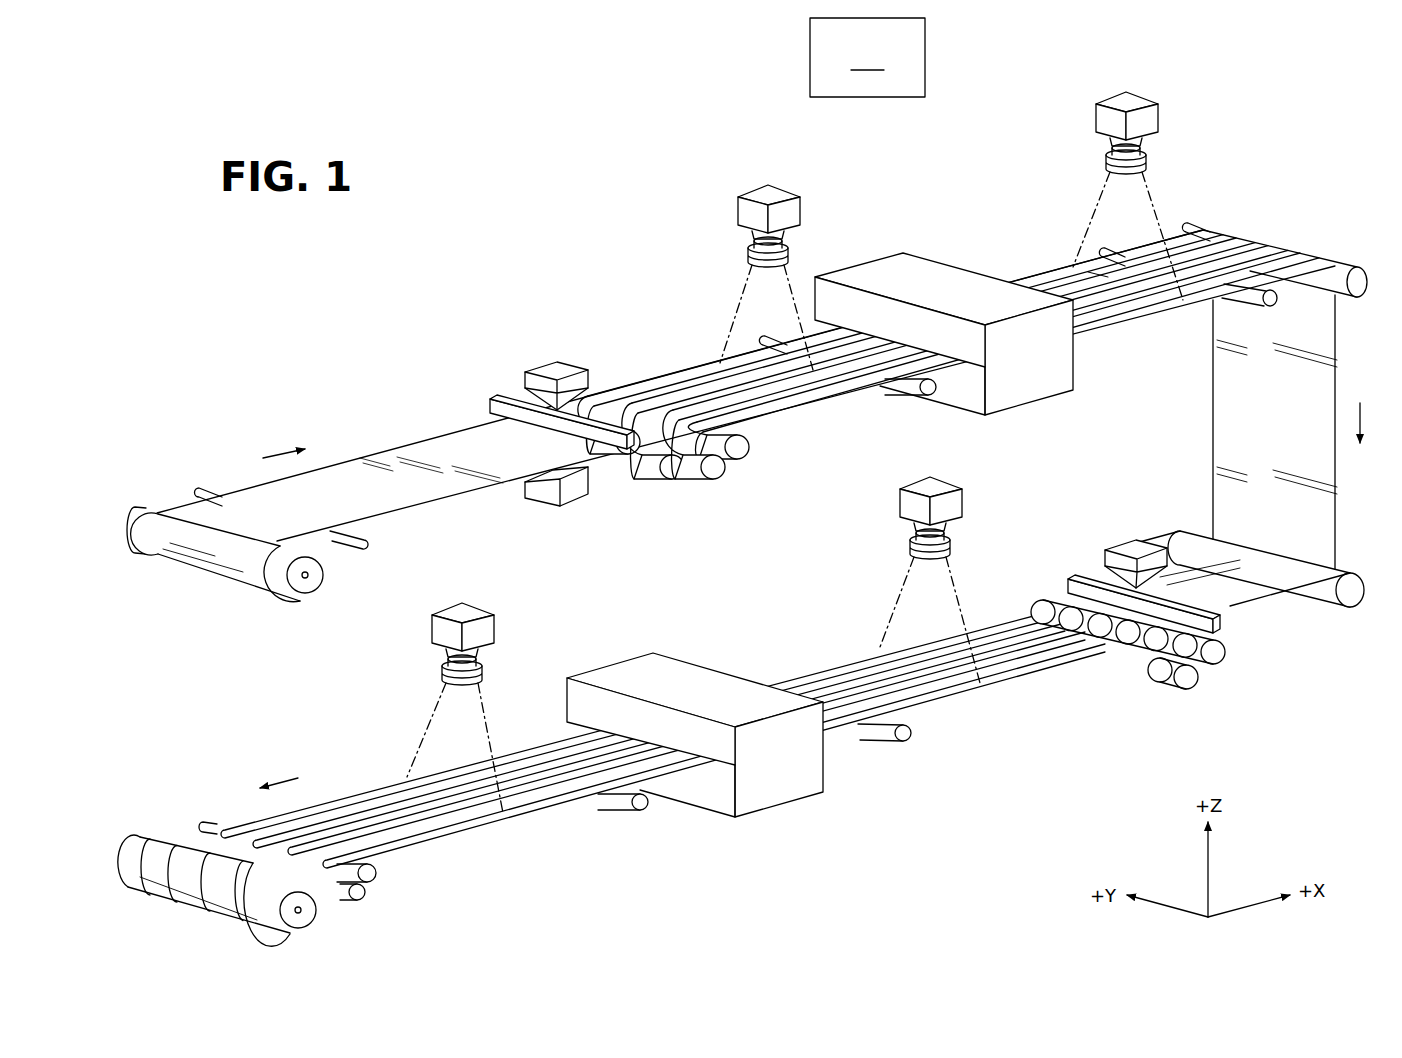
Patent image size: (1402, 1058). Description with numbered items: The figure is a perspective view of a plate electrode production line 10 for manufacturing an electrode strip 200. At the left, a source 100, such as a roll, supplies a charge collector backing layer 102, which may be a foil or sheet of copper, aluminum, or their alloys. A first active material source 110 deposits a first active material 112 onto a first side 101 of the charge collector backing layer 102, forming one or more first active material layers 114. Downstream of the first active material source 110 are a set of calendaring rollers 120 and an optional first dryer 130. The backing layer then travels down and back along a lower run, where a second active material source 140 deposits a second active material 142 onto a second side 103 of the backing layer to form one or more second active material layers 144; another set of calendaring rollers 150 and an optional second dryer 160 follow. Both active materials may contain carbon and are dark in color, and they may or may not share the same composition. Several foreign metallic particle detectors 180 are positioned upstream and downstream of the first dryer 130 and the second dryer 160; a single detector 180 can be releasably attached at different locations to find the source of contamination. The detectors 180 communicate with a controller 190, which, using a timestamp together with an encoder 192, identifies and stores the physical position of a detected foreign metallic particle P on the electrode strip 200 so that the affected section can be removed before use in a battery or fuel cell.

The plate electrode production line 10 is at (1253, 166).
The source 100 is at (733, 459).
The first side 101 is at (747, 459).
The charge collector backing layer 102 is at (243, 520).
The second side 103 is at (453, 498).
The first active material source 110 is at (559, 364).
The first active material 112 is at (558, 365).
The first active material layer 114 is at (703, 370).
The set of calendaring rollers 120 is at (948, 392).
The first dryer 130 is at (876, 252).
The second active material source 140 is at (1136, 548).
The second active material 142 is at (1137, 548).
The second active material layer 144 is at (1010, 612).
The set of calendaring rollers 150 is at (1184, 703).
The second dryer 160 is at (620, 655).
The foreign metallic particle detector 180 is at (753, 180).
The controller 190 is at (867, 57).
The encoder 192 is at (571, 507).
The electrode strip 200 is at (481, 838).
The foreign metallic particle P is at (1098, 277).